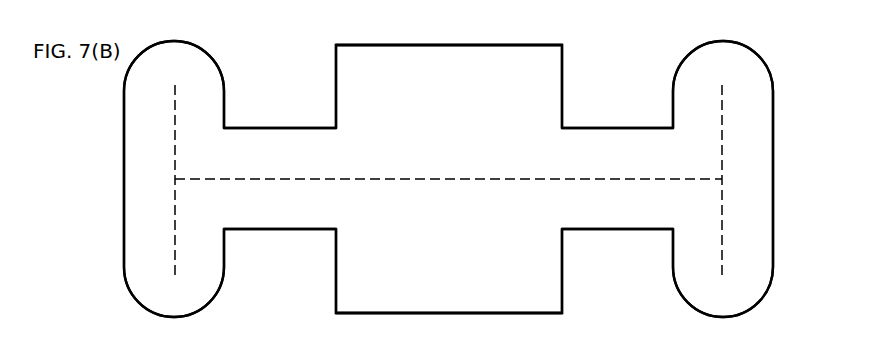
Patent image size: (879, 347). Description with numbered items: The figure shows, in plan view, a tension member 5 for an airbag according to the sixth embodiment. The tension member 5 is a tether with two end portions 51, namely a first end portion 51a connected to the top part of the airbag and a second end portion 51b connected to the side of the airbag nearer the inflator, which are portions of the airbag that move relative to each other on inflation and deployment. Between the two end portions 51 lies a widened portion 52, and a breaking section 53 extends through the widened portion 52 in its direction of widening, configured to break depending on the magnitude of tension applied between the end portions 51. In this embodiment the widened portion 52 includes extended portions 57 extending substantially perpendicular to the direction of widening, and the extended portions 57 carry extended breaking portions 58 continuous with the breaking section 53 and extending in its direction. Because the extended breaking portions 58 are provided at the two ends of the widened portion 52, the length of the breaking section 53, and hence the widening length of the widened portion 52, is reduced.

The tension member for airbag 5 is at (285, 26).
The end portions 51 is at (449, 179).
The first end portion 51a is at (562, 50).
The second end portion 51b is at (562, 290).
The widened portion 52 is at (279, 127).
The breaking section 53 is at (347, 189).
The extended portions 57 is at (124, 271).
The extended breaking portions 58 is at (165, 150).